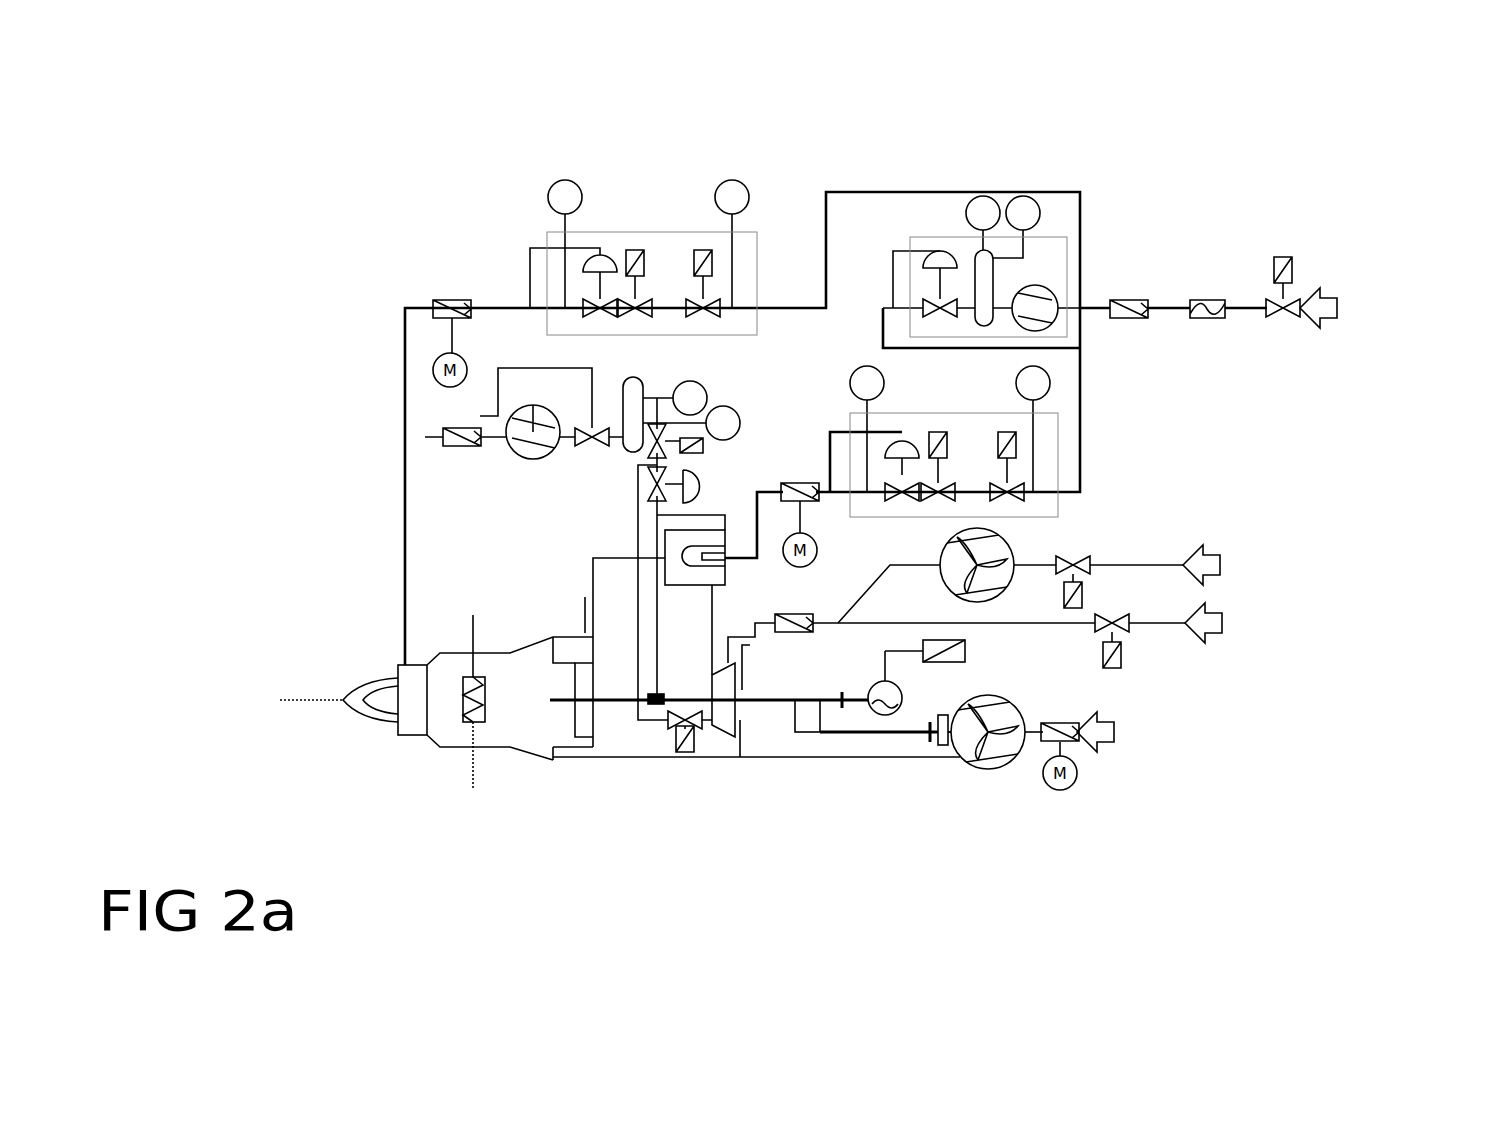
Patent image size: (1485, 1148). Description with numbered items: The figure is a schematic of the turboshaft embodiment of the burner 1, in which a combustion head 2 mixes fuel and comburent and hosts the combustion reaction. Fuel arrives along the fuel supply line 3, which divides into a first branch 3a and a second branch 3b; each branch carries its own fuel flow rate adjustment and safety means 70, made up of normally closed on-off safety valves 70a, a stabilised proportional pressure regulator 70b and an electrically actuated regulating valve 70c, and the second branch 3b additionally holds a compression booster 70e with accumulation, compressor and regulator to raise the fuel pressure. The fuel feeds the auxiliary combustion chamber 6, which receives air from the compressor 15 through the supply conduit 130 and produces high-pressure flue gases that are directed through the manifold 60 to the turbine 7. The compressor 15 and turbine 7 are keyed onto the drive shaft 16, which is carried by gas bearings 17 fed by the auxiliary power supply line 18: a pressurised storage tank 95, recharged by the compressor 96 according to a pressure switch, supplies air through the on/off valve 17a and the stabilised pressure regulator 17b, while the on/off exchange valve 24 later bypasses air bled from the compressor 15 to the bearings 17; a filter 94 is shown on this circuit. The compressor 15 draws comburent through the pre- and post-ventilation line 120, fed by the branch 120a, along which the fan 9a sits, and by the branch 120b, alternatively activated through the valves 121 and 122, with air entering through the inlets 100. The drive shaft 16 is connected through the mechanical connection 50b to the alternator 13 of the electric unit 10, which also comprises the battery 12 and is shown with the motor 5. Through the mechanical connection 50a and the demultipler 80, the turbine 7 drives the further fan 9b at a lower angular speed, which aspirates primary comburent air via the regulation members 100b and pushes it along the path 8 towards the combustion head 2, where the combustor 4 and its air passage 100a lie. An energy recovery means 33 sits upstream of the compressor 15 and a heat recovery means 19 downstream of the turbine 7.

The burner 1 is at (1370, 108).
The combustion head 2 is at (345, 670).
The fuel supply line 3 is at (1250, 300).
The first branch 3a is at (828, 190).
The second branch 3b is at (782, 488).
The combustor 4 is at (550, 640).
The motor 5 is at (1072, 783).
The auxiliary combustion chamber 6 is at (727, 525).
The turbine 7 is at (590, 760).
The path 8 is at (603, 635).
The fan 9a is at (1018, 548).
The fan 9b is at (980, 772).
The electric unit 10 is at (866, 760).
The battery 12 is at (944, 640).
The alternator 13 is at (893, 748).
The compressor 15 is at (716, 748).
The drive shaft 16 is at (668, 693).
The gas bearings 17 is at (655, 745).
The on/off valve 17a is at (640, 455).
The stabilised pressure regulator 17b is at (650, 498).
The auxiliary power supply line 18 is at (710, 380).
The heat recovery means 19 is at (470, 725).
The on/off exchange valve 24 is at (680, 768).
The energy recovery means 33 is at (945, 678).
The mechanical connection 50a is at (940, 762).
The mechanical connection 50b is at (849, 745).
The manifold 60 is at (600, 560).
The fuel flow rate adjustment and safety means 70 is at (1165, 210).
The on-off safety valves 70a is at (686, 240).
The stabilised proportional pressure regulator 70b is at (614, 232).
The electrically actuated regulating valve 70c is at (487, 285).
The compression booster 70e is at (945, 232).
The demultipler 80 is at (815, 760).
The filter 94 is at (445, 428).
The storage tank 95 is at (635, 395).
The compressor 96 is at (533, 432).
The inlets 100 is at (1225, 635).
The air passage 100a is at (765, 760).
The regulation members 100b is at (1088, 748).
The pre- and post-ventilation line 120 is at (760, 640).
The branch 120a is at (1180, 556).
The branch 120b is at (1162, 640).
The valve 121 is at (1098, 556).
The valve 122 is at (1098, 645).
The supply conduit 130 is at (720, 615).